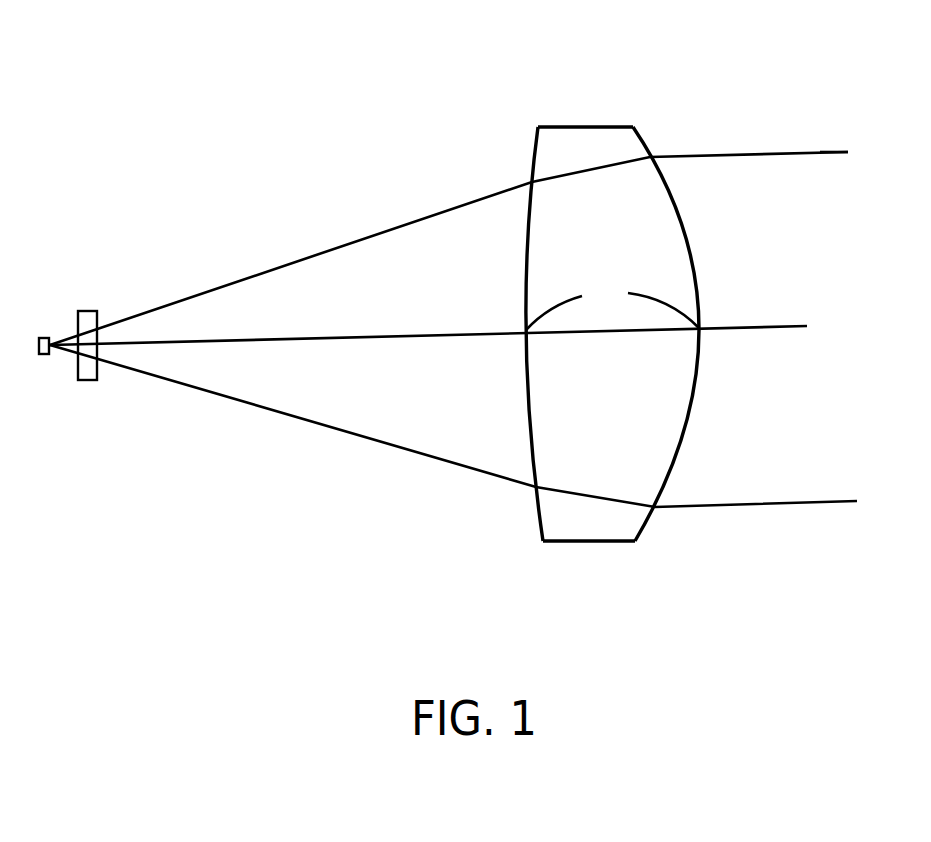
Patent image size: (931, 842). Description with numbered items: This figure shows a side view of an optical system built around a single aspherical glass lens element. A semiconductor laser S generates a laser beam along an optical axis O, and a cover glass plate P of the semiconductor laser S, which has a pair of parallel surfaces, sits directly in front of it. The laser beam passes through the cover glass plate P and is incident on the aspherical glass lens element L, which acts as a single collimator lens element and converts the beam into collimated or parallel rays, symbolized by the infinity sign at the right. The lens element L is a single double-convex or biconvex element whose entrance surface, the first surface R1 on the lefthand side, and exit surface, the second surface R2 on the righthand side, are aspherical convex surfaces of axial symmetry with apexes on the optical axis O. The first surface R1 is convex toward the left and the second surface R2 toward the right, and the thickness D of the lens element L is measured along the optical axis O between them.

The semiconductor laser S is at (43, 356).
The cover glass plate P is at (88, 382).
The optical axis O is at (418, 337).
The aspherical glass lens element L is at (583, 337).
The first surface R1 is at (536, 147).
The second surface R2 is at (643, 138).
The thickness D is at (612, 306).